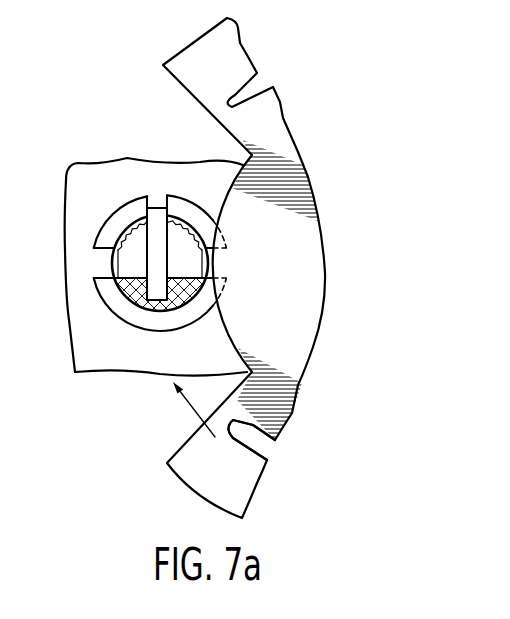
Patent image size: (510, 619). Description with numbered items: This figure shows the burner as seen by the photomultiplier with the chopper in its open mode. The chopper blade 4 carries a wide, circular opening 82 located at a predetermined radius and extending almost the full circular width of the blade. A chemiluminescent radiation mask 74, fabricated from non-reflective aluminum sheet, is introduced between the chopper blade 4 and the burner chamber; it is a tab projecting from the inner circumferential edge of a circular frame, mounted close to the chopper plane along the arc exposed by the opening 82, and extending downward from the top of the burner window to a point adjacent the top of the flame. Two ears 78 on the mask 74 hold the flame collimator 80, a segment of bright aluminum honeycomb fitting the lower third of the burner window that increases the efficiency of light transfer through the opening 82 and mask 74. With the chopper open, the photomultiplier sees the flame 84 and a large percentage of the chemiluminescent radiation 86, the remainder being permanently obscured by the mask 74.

The chopper blade 4 is at (196, 98).
The chemiluminescent radiation mask 74 is at (151, 236).
The ears 78 is at (100, 263).
The flame collimator 80 is at (180, 303).
The opening 82 is at (232, 440).
The flame 84 is at (143, 311).
The chemiluminescent radiation 86 is at (113, 222).